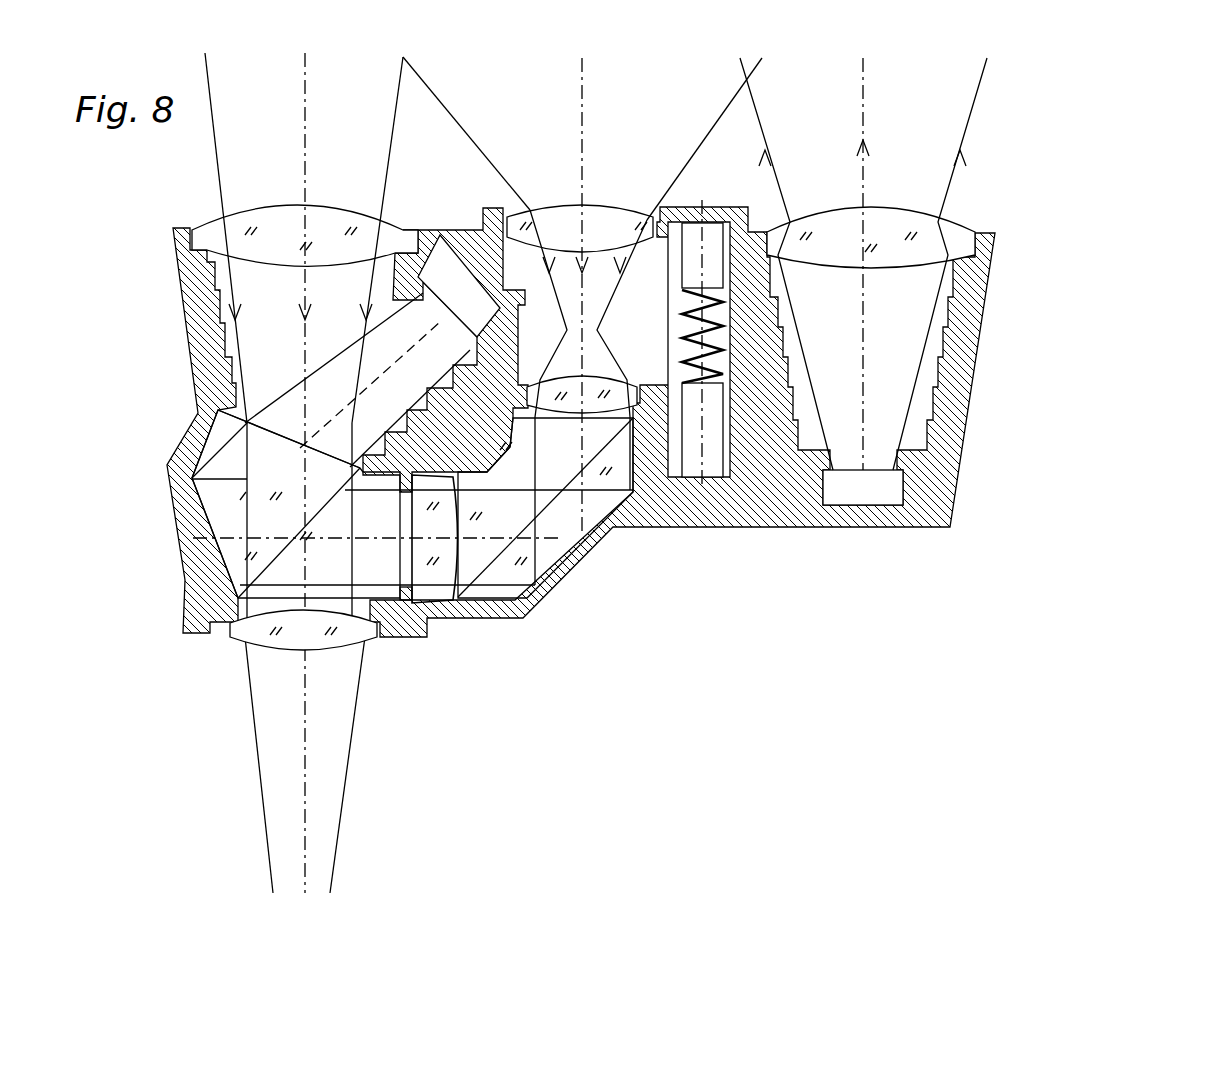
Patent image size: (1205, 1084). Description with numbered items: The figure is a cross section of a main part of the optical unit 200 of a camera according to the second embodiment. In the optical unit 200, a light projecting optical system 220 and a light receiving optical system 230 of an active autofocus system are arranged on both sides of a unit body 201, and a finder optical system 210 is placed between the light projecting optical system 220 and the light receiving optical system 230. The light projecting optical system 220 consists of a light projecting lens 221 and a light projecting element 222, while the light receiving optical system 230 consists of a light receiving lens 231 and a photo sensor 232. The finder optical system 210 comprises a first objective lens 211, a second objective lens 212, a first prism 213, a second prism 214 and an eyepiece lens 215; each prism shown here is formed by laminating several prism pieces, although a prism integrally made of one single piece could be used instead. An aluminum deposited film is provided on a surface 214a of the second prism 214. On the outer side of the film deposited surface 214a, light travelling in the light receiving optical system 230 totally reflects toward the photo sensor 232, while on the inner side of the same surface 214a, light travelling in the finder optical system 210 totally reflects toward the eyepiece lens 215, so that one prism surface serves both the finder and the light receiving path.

The optical unit 200 is at (728, 637).
The unit body 201 is at (781, 527).
The finder optical system 210 is at (601, 133).
The first objective lens 211 is at (617, 207).
The second objective lens 212 is at (601, 383).
The first prism 213 is at (567, 520).
The second prism 214 is at (217, 500).
The film deposited surface 214a is at (270, 430).
The eyepiece lens 215 is at (380, 632).
The light projecting optical system 220 is at (1117, 292).
The light projecting lens 221 is at (968, 240).
The light projecting element 222 is at (897, 493).
The light receiving optical system 230 is at (474, 153).
The light receiving lens 231 is at (342, 217).
The photo sensor 232 is at (447, 277).